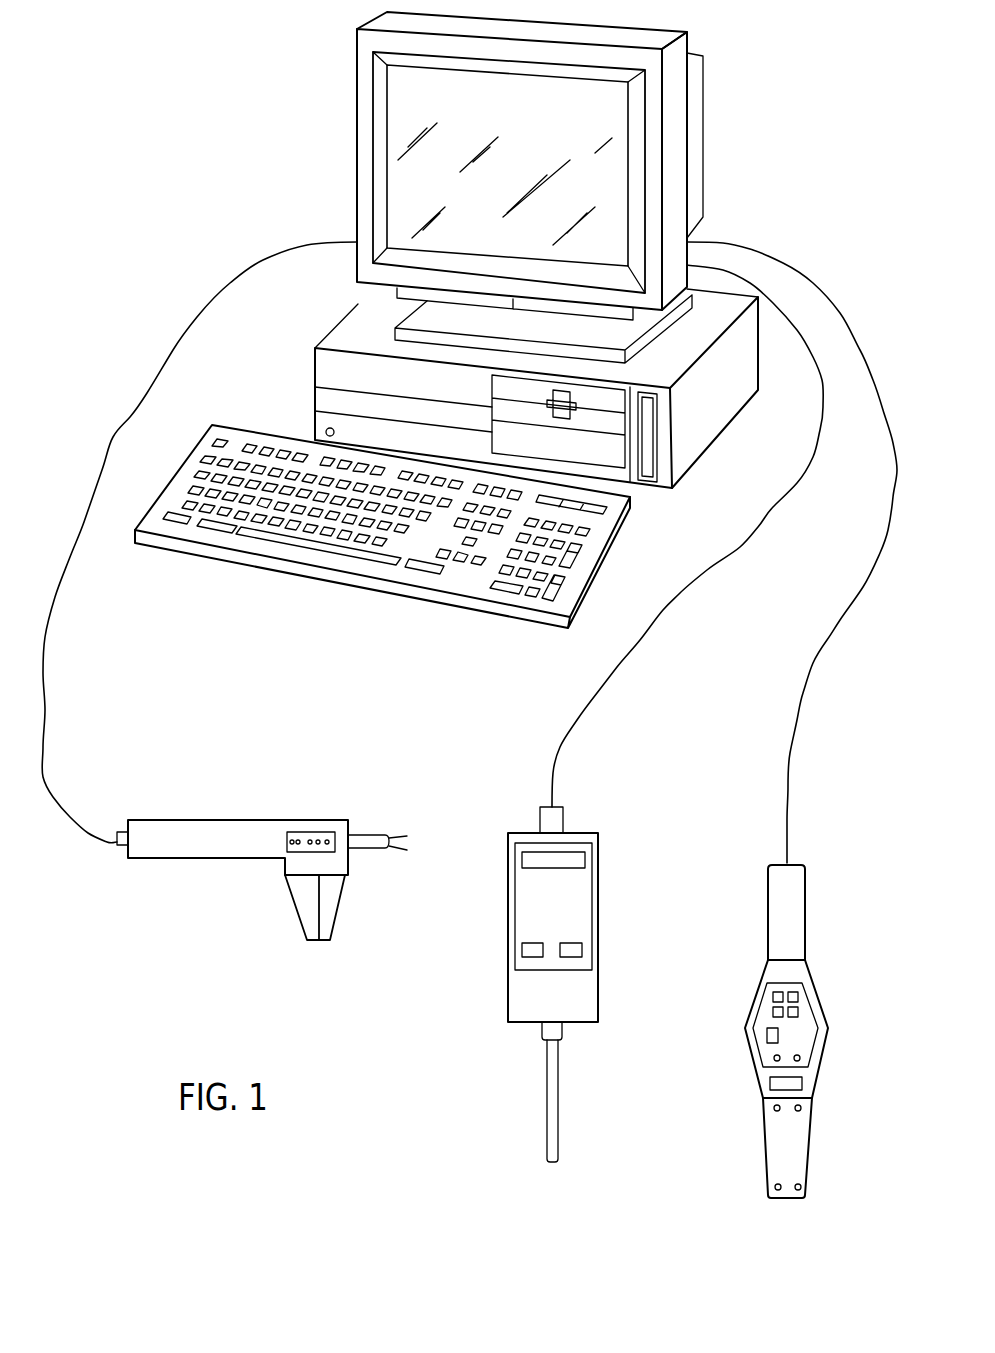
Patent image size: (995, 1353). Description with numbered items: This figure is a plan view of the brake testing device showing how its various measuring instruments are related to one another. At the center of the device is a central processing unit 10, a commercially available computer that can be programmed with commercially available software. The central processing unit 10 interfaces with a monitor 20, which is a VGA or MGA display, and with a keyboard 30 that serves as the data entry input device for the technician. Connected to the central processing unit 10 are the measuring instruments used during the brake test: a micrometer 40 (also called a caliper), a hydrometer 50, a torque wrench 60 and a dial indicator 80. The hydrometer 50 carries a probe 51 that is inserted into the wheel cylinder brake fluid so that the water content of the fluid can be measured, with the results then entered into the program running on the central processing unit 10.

The central processing unit 10 is at (352, 322).
The monitor 20 is at (672, 133).
The keyboard 30 is at (455, 582).
The micrometer 40 is at (247, 843).
The hydrometer 50 is at (367, 835).
The probe 51 is at (393, 850).
The torque wrench 60 is at (802, 1025).
The dial indicator 80 is at (565, 905).